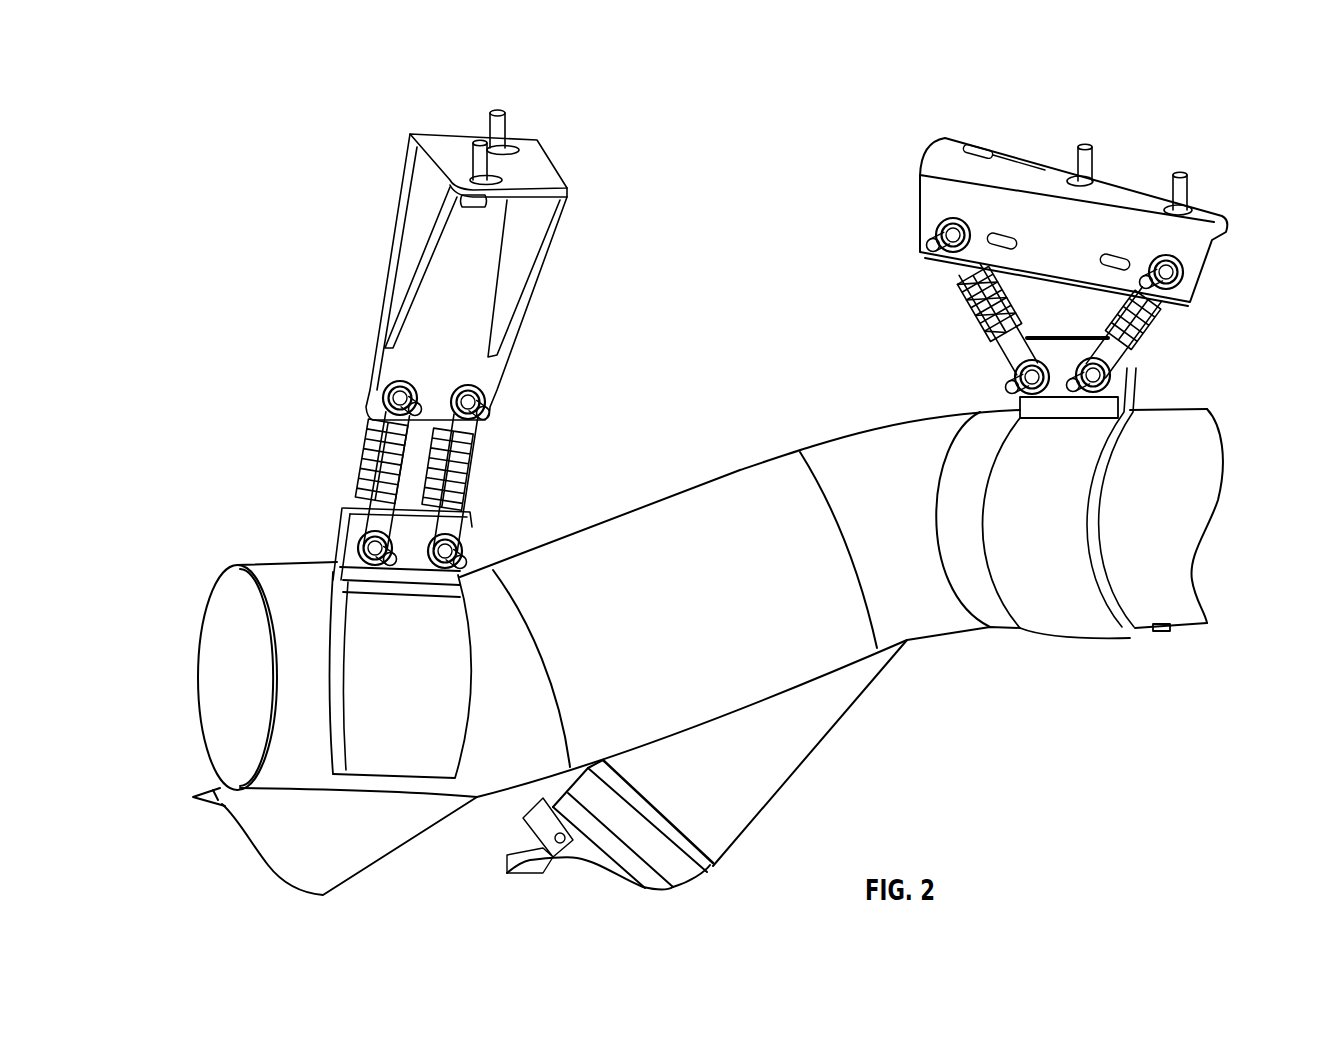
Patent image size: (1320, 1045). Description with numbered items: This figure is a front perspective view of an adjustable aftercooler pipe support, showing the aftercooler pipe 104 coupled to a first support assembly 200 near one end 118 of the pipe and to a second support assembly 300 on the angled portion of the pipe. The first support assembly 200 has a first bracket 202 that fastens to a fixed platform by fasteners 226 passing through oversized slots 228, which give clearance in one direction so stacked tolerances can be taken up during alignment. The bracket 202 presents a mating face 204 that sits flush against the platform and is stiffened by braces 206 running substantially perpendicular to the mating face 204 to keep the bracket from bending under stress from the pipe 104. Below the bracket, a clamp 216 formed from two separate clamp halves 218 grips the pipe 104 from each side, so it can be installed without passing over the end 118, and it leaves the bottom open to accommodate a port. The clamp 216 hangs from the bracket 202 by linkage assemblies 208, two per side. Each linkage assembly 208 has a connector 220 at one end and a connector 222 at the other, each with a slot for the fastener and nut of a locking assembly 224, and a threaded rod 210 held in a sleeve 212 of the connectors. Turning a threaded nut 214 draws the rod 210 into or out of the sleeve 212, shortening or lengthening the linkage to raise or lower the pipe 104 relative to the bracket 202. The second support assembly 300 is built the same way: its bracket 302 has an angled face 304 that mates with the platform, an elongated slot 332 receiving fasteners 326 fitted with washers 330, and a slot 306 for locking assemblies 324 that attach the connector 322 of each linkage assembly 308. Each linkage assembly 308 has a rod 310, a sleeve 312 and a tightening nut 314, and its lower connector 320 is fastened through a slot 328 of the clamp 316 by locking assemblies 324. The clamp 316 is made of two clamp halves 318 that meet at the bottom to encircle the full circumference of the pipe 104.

The aftercooler pipe 104 is at (772, 567).
The end of the pipe 118 is at (215, 628).
The first support assembly 200 is at (343, 258).
The first bracket 202 is at (500, 378).
The mating face 204 is at (553, 180).
The braces 206 is at (548, 242).
The linkage assembly 208 is at (437, 480).
The rod 210 is at (372, 463).
The sleeve 212 is at (470, 443).
The threaded nut 214 is at (468, 474).
The clamp 216 is at (448, 693).
The clamp halves 218 is at (327, 566).
The connector 220 is at (365, 548).
The connector 222 is at (384, 390).
The locking assembly 224 is at (488, 412).
The fasteners 226 is at (490, 126).
The slots 228 is at (520, 143).
The second support assembly 300 is at (828, 175).
The bracket 302 is at (918, 190).
The angled face 304 is at (958, 142).
The slot 306 is at (1112, 255).
The linkage assemblies 308 is at (1028, 321).
The rod 310 is at (988, 320).
The sleeve 312 is at (967, 274).
The nut 314 is at (1004, 377).
The clamp 316 is at (1040, 640).
The clamp halves 318 is at (1150, 405).
The connector 320 is at (1132, 375).
The connector 322 is at (1185, 285).
The locking assemblies 324 is at (925, 243).
The fasteners 326 is at (1093, 150).
The slot 328 is at (1045, 340).
The washers 330 is at (1088, 178).
The elongated slot 332 is at (1040, 165).